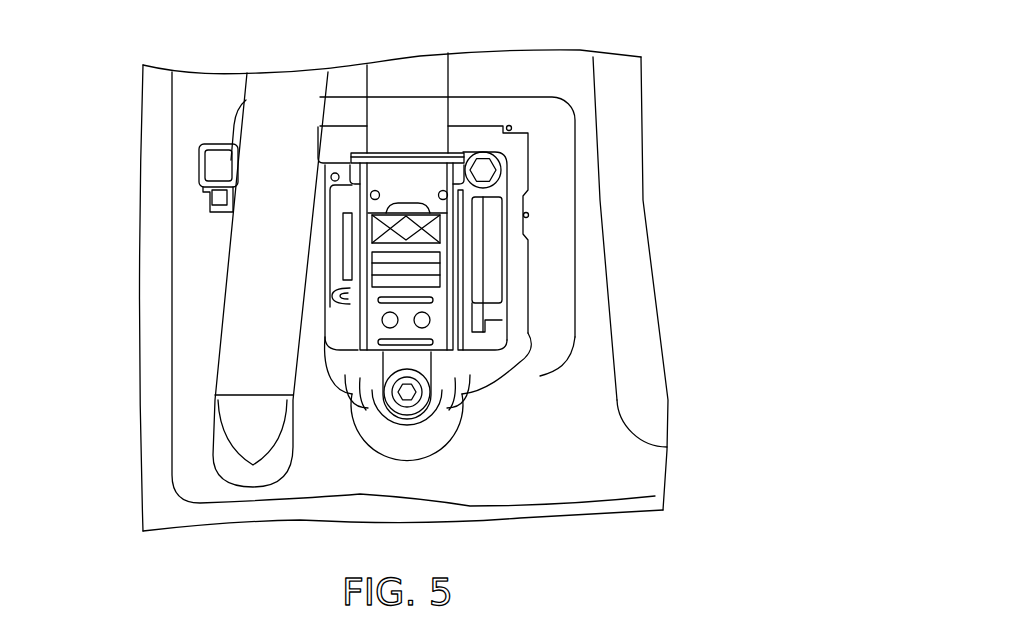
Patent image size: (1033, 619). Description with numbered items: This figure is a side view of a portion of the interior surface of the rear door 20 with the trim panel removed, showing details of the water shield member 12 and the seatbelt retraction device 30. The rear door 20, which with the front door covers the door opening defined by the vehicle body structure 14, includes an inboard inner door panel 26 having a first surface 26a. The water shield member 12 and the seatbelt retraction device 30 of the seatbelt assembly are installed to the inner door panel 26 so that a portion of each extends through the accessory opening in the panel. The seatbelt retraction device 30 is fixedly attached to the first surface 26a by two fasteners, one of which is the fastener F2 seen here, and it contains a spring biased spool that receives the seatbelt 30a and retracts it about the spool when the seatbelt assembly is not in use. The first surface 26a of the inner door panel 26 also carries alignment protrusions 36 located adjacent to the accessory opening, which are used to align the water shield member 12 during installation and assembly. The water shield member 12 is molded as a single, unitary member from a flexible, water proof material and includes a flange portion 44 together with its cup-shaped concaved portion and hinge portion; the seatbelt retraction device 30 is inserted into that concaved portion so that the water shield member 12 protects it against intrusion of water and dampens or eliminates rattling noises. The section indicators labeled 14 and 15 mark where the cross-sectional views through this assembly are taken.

The rear door 20 is at (623, 28).
The water shield member 12 is at (552, 157).
The inner door panel 26 is at (573, 72).
The first surface 26a is at (587, 371).
The seatbelt retraction device 30 is at (372, 318).
The seatbelt 30a is at (428, 76).
The alignment protrusions 36 is at (509, 126).
The flange portion 44 is at (548, 310).
The fastener F2 is at (407, 392).
The vehicle body structure 14 is at (404, 95).
The section line 15- 15 is at (120, 265).